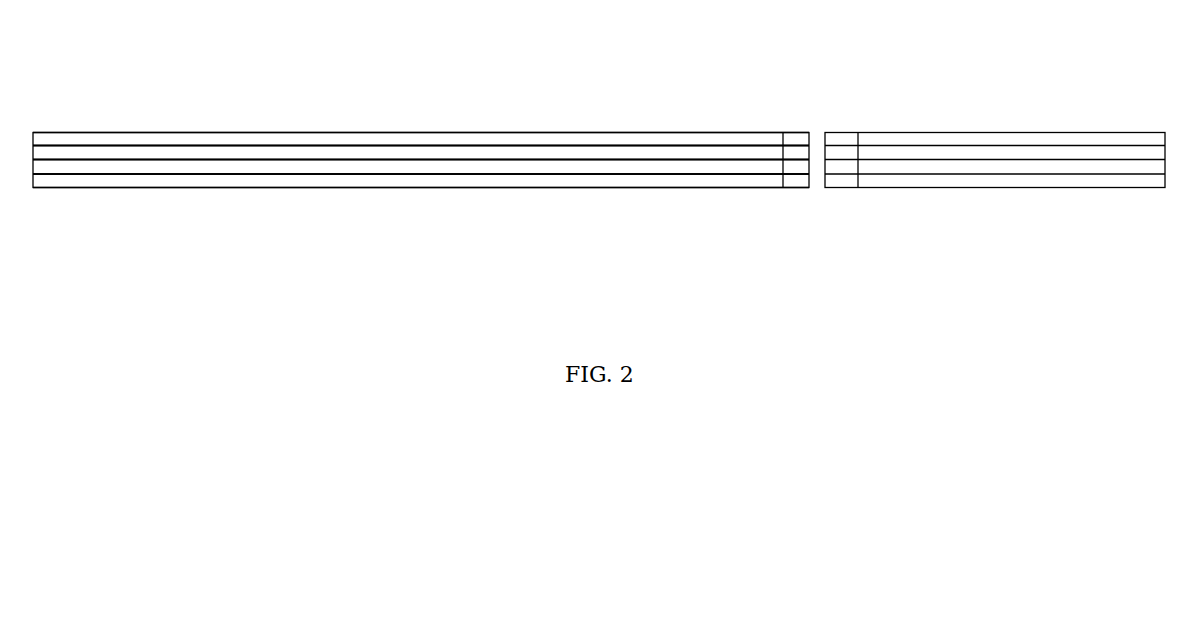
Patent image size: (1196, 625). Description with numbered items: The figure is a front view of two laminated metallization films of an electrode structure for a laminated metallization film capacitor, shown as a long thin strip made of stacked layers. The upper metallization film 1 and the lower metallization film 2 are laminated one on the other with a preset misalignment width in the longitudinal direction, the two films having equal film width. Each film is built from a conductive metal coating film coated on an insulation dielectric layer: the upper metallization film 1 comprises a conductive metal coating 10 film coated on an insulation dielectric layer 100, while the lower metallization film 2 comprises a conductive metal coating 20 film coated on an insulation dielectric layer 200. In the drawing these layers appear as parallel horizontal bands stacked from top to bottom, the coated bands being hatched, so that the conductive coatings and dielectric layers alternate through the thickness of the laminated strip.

The upper metallization film 1 is at (395, 145).
The conductive metal coating 10 is at (198, 140).
The insulation dielectric layer 100 is at (518, 153).
The insulation dielectric layer 200 is at (317, 178).
The lower metallization film 2 is at (635, 173).
The conductive metal coating 20 is at (910, 170).